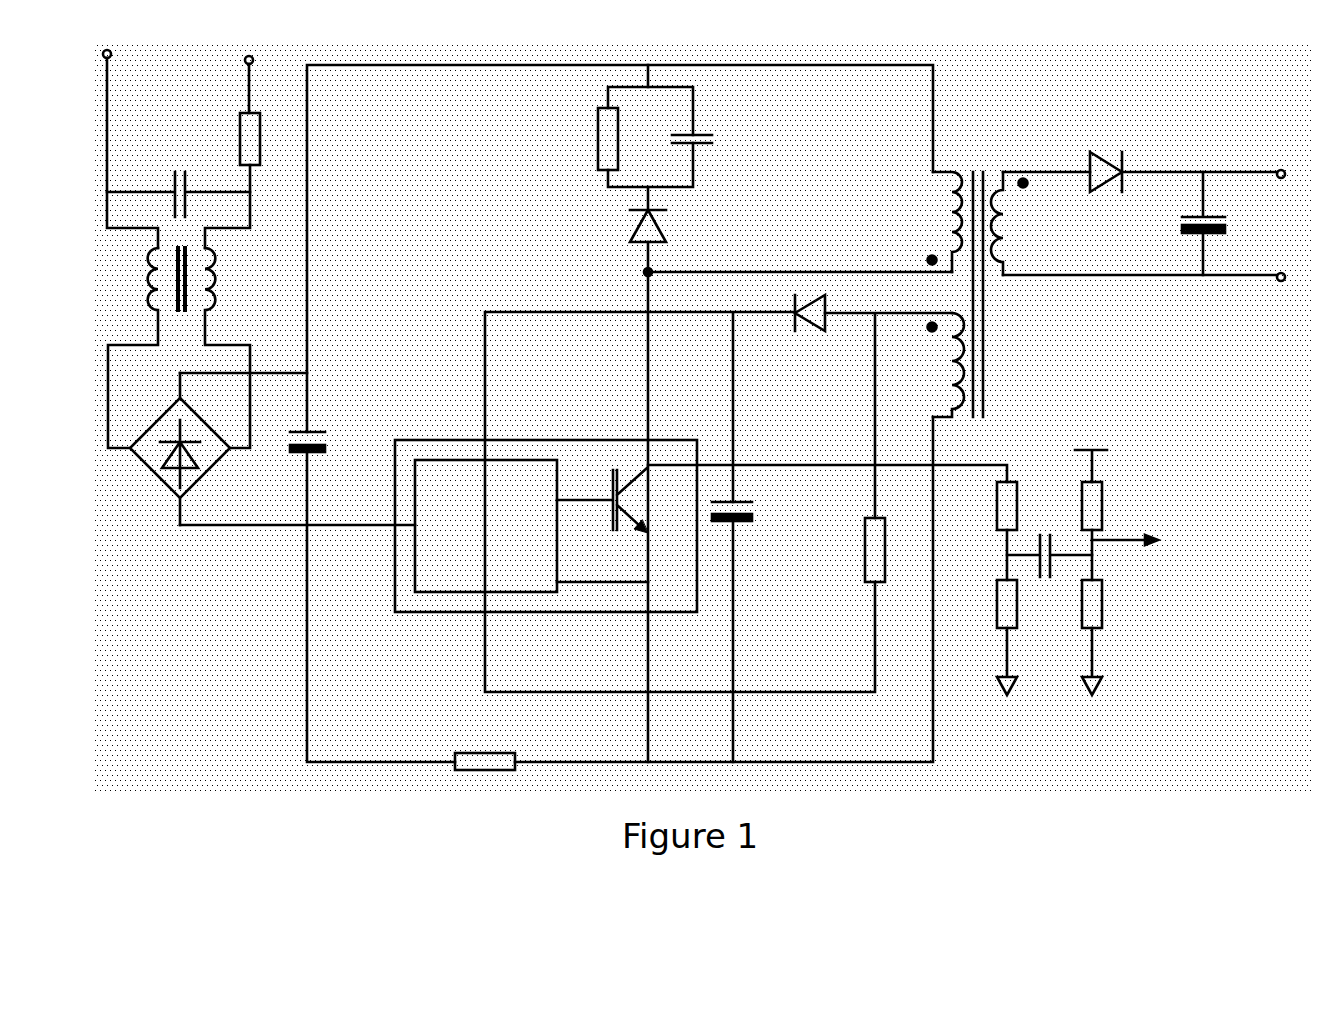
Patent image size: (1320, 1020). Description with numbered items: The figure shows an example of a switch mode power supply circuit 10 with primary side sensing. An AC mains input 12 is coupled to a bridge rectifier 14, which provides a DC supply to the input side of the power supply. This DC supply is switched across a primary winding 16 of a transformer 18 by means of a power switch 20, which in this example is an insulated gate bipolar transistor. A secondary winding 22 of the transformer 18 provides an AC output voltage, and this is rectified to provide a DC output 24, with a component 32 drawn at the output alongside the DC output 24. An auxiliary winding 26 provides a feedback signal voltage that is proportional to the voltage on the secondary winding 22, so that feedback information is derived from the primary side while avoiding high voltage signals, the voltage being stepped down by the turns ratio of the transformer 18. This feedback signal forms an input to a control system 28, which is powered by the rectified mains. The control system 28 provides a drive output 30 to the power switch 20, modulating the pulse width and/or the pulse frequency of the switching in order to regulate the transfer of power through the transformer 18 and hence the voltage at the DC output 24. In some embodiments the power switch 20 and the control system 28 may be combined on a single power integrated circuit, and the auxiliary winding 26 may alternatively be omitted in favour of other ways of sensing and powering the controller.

The switch mode power supply circuit 10 is at (228, 773).
The AC mains input 12 is at (201, 46).
The bridge rectifier 14 is at (160, 480).
The primary winding 16 is at (938, 175).
The transformer 18 is at (984, 160).
The power switch 20 is at (652, 504).
The secondary winding 22 is at (1027, 176).
The DC output 24 is at (1263, 162).
The auxiliary winding 26 is at (942, 420).
The control system 28 is at (437, 594).
The drive output 30 is at (580, 503).
The output capacitor 32 is at (1216, 234).